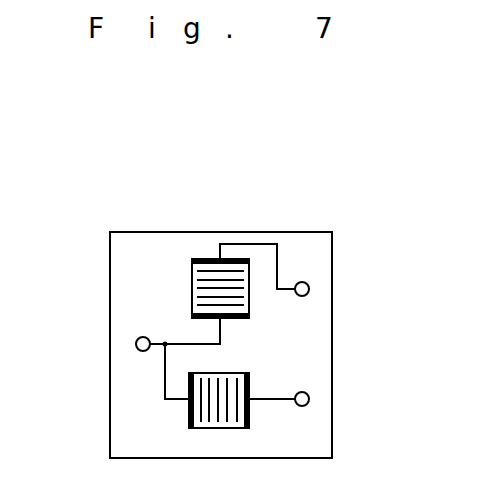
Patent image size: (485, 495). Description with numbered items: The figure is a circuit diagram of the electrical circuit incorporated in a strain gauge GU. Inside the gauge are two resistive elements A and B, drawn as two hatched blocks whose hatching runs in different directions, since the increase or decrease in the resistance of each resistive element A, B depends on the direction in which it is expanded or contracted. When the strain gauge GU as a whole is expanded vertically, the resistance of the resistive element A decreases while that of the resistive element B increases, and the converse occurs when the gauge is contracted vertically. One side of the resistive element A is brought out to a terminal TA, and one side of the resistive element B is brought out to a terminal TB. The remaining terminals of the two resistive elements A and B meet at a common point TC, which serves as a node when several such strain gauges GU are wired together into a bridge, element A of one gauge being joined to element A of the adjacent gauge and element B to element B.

The strain gauge GU is at (168, 232).
The resistive element A is at (192, 283).
The resistive element B is at (190, 411).
The terminal TA is at (309, 289).
The terminal TB is at (309, 399).
The point TC is at (136, 345).